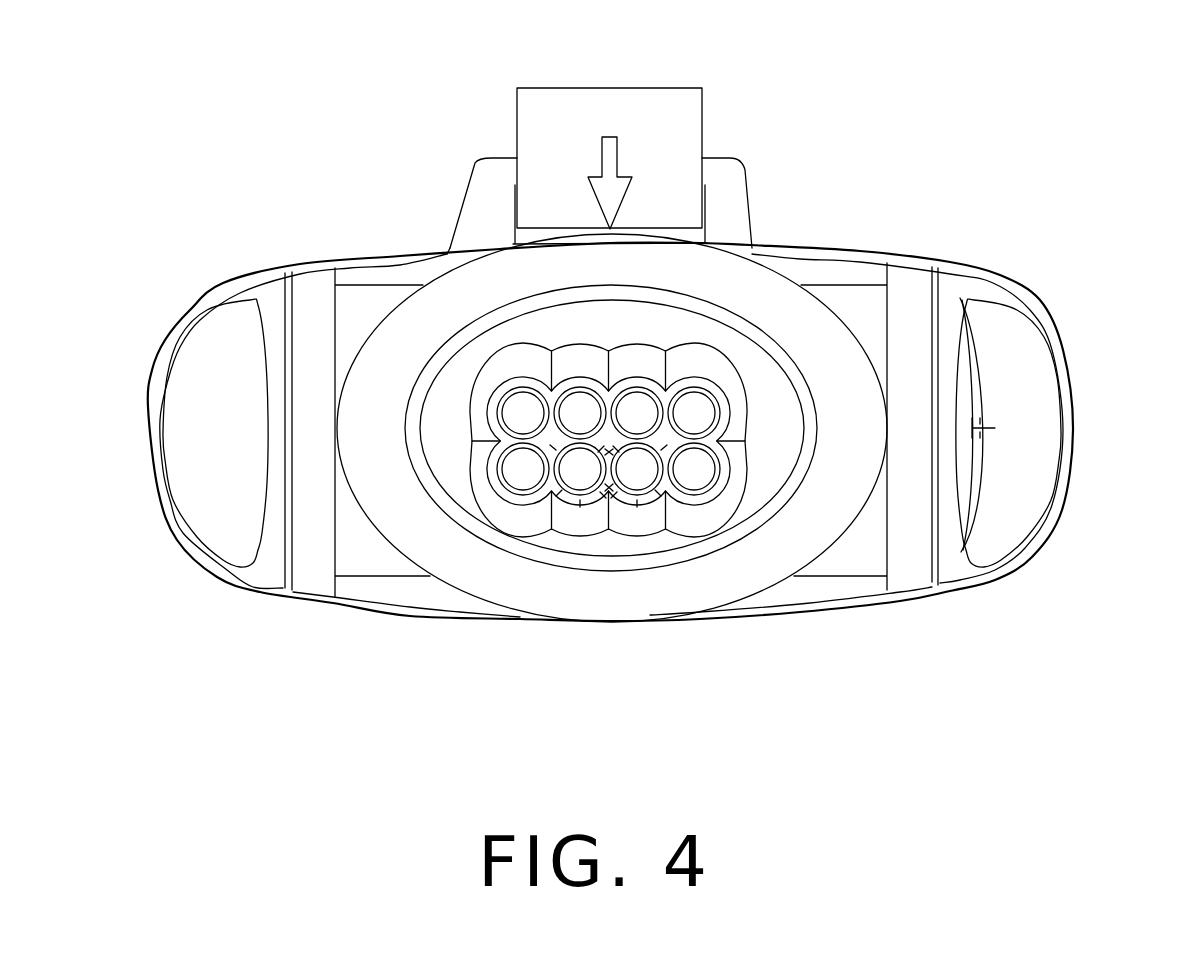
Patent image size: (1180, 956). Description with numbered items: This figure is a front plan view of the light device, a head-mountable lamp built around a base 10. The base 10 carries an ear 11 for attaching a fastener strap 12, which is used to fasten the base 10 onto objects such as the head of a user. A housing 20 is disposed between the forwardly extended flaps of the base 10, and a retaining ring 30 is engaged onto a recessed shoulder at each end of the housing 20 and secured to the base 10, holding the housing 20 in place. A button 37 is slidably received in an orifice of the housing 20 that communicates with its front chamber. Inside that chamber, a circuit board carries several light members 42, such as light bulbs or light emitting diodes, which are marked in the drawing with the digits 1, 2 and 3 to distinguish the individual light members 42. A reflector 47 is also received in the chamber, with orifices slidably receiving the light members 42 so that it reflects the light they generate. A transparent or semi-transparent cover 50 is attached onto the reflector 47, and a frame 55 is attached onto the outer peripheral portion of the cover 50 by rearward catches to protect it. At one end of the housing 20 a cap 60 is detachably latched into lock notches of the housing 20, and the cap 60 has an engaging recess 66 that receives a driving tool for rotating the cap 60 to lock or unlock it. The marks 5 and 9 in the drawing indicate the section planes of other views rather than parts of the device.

The base 10 is at (848, 250).
The ear 11 is at (545, 242).
The fastener strap 12 is at (658, 110).
The housing 20 is at (380, 300).
The retaining ring 30 is at (308, 280).
The button 37 is at (608, 228).
The light member 42 is at (608, 524).
The reflector 47 is at (710, 543).
The cover 50 is at (770, 465).
The frame 55 is at (612, 470).
The cap 60 is at (967, 480).
The engaging recess 66 is at (993, 425).
The section line 5 is at (140, 427).
The section line 9 is at (906, 100).
The LED group 1 is at (608, 475).
The LED group 2 is at (608, 413).
The LED group 3 is at (608, 441).